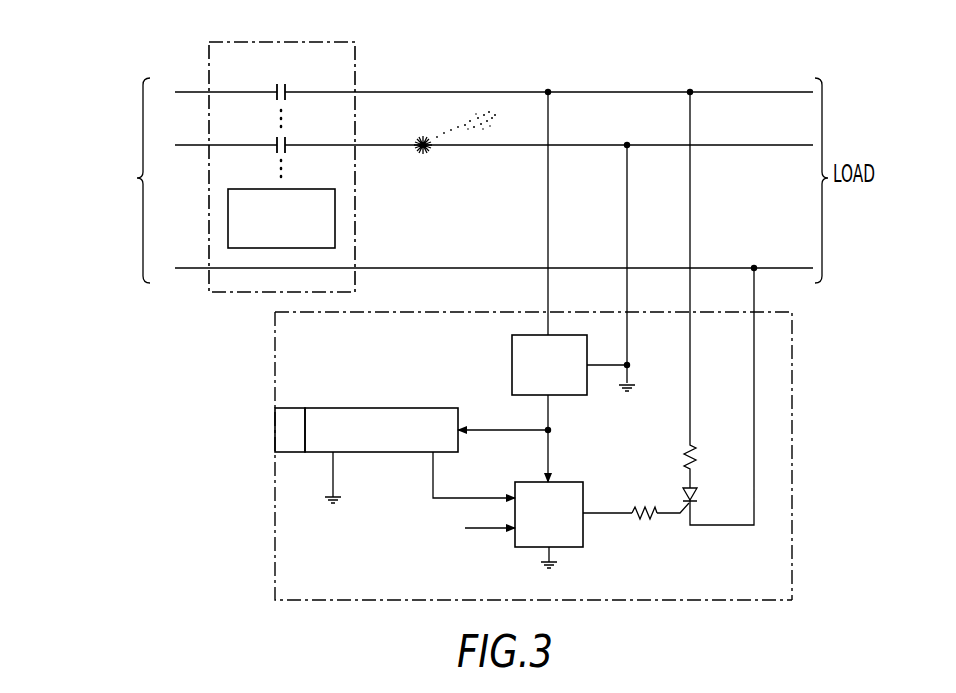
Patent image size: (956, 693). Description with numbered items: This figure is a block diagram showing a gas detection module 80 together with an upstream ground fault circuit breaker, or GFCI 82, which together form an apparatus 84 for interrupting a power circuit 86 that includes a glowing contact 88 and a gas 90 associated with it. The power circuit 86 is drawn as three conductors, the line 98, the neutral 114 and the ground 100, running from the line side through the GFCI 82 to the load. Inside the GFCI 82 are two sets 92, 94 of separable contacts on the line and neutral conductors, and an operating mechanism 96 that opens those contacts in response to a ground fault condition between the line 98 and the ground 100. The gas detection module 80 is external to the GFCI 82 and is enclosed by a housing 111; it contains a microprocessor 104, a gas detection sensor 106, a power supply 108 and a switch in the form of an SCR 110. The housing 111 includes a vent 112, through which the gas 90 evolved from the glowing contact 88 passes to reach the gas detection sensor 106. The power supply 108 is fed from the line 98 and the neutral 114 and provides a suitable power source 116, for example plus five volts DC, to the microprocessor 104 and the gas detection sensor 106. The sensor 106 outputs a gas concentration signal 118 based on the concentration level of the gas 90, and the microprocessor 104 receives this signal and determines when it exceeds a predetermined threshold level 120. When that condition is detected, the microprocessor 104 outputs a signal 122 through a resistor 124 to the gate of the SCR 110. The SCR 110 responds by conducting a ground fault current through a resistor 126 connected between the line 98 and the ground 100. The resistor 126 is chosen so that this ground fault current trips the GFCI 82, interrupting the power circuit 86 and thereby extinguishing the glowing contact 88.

The gas detection module 80 is at (270, 577).
The upstream ground fault circuit breaker (GFCI) 82 is at (220, 42).
The apparatus for interrupting a power circuit 84 is at (250, 347).
The power circuit 86 is at (130, 148).
The glowing contact 88 is at (430, 152).
The gas 90 is at (492, 118).
The set of separable contacts 92 is at (287, 96).
The set of separable contacts 94 is at (287, 149).
The operating mechanism 96 is at (228, 222).
The line 98 is at (366, 92).
The ground 100 is at (366, 268).
The microprocessor 104 is at (570, 548).
The gas detection sensor 106 is at (362, 408).
The power supply 108 is at (512, 351).
The SCR 110 is at (697, 492).
The housing 111 is at (792, 547).
The vent 112 is at (292, 408).
The neutral 114 is at (366, 145).
The power source 116 is at (553, 430).
The gas concentration signal 118 is at (432, 490).
The predetermined threshold level 120 is at (495, 532).
The signal 122 is at (598, 513).
The resistor 124 is at (638, 516).
The resistor 126 is at (688, 448).